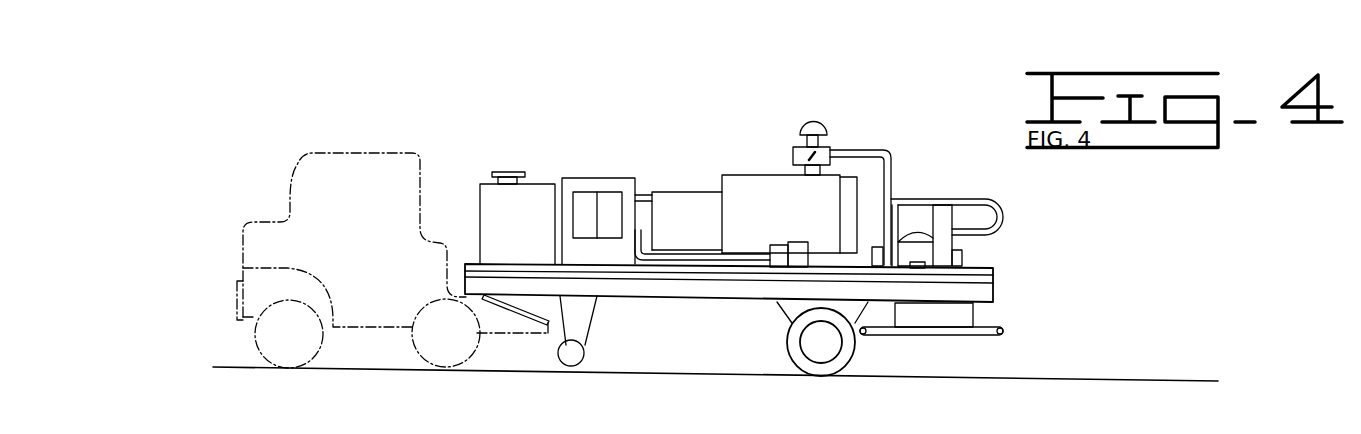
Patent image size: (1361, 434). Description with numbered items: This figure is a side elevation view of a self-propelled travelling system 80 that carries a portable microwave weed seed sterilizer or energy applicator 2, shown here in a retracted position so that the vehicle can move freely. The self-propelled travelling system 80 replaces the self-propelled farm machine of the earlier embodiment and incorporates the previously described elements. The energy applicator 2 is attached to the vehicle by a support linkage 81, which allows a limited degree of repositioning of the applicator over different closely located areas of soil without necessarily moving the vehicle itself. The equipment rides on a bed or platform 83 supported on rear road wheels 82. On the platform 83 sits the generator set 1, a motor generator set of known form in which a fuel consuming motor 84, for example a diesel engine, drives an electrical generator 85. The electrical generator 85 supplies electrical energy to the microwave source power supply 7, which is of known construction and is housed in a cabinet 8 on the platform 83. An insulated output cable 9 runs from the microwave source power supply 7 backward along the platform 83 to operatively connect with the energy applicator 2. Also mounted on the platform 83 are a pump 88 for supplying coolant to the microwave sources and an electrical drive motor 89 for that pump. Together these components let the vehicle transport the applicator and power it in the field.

The generator set 1 is at (715, 153).
The portable microwave weed seed sterilizer or energy applicator 2 is at (990, 317).
The microwave source power supply 7 is at (570, 152).
The cabinet 8 is at (602, 178).
The insulated output cable 9 is at (652, 266).
The self-propelled travelling system 80 is at (358, 135).
The support linkage 81 is at (968, 262).
The rear road wheels 82 is at (853, 354).
The platform 83 is at (472, 260).
The fuel consuming motor 84 is at (767, 176).
The electrical generator 85 is at (678, 192).
The pump 88 is at (796, 242).
The electrical drive motor 89 is at (772, 245).